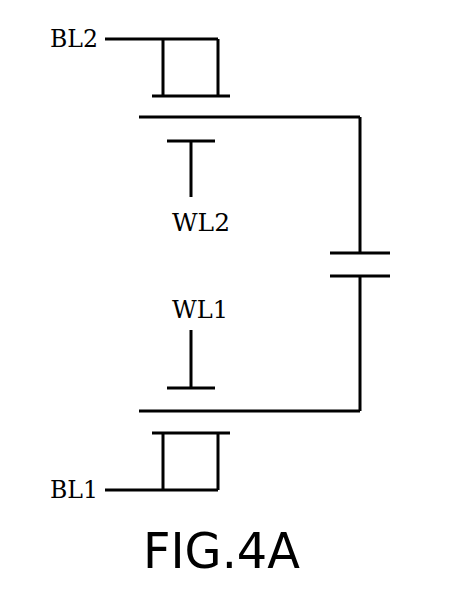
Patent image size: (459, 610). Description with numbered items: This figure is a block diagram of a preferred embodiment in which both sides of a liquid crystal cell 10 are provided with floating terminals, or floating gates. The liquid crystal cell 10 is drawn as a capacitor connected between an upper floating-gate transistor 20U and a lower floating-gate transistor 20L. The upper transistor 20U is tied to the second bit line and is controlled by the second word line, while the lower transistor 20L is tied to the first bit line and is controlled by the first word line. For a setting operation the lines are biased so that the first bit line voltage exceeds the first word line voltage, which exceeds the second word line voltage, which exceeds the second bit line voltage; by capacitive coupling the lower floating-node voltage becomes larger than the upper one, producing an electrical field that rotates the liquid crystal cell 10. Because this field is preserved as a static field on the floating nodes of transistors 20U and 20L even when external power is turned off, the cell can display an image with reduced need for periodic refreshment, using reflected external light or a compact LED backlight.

The liquid crystal cell 10 is at (385, 265).
The upper floating-gate transistor 20U is at (146, 106).
The lower floating-gate transistor 20L is at (147, 426).